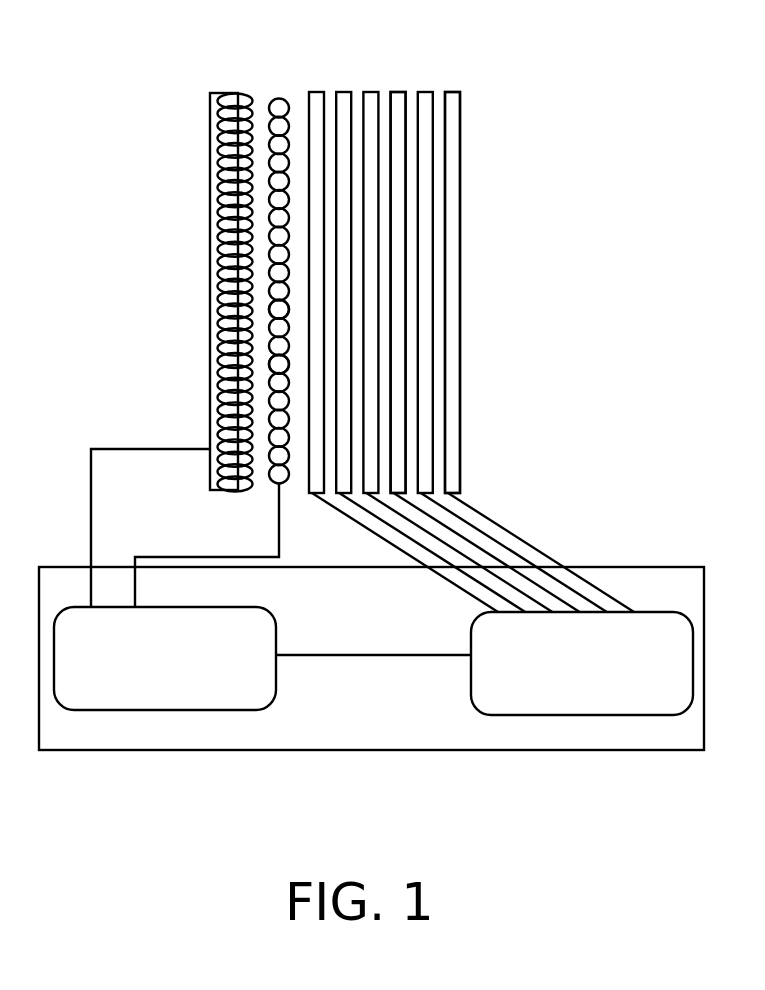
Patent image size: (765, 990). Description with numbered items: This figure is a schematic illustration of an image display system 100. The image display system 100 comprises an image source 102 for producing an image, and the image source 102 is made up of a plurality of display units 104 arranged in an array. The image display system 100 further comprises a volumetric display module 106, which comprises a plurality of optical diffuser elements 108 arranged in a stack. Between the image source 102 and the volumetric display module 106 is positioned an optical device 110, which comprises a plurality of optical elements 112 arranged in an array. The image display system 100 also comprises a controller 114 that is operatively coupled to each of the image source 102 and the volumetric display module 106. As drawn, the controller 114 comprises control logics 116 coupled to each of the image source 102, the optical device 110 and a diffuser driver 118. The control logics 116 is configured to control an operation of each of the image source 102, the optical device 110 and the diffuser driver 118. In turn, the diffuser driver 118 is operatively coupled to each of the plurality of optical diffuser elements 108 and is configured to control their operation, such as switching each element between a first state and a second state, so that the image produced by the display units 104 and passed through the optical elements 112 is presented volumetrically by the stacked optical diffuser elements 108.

The image display system 100 is at (519, 75).
The image source 102 is at (188, 124).
The display units 104 is at (225, 305).
The volumetric display module 106 is at (470, 357).
The optical diffuser elements 108 is at (395, 288).
The optical device 110 is at (276, 88).
The optical elements 112 is at (275, 302).
The controller 114 is at (371, 658).
The control logics 116 is at (166, 579).
The diffuser driver 118 is at (484, 604).